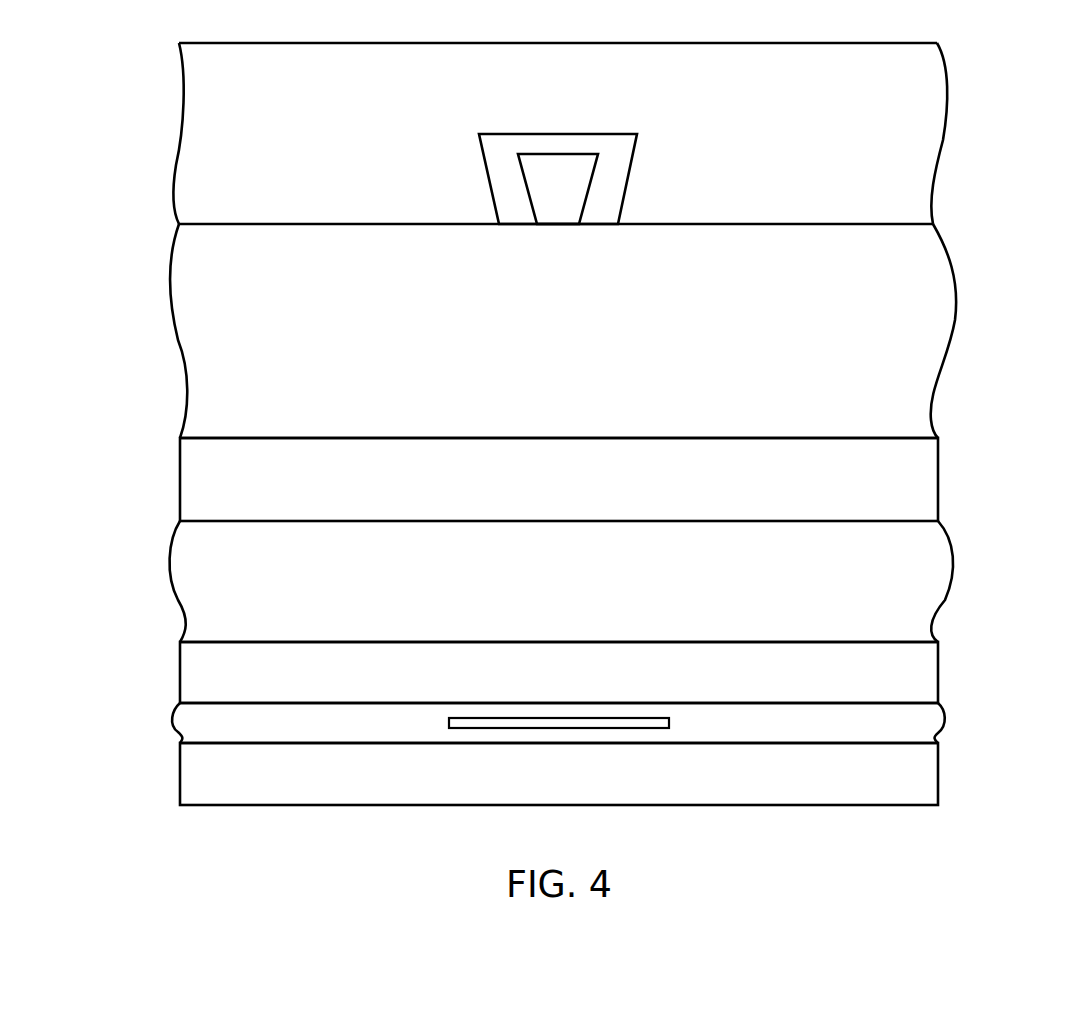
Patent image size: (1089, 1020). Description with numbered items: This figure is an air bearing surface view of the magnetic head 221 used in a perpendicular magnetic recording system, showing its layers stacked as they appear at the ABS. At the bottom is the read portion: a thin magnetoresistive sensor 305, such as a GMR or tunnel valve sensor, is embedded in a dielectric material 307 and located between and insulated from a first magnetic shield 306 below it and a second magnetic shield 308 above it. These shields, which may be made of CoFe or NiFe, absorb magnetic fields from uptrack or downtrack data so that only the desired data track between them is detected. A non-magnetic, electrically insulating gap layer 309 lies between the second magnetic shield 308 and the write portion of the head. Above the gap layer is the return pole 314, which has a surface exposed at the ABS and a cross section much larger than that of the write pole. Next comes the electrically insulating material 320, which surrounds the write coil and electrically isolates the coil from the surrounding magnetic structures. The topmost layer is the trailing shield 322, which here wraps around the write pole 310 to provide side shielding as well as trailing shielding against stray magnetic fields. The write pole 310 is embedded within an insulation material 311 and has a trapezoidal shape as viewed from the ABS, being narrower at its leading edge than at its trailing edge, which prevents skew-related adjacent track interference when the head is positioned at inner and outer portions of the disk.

The magnetic head 221 is at (973, 63).
The trailing shield 322 is at (389, 137).
The insulation material 311 is at (622, 165).
The write pole 310 is at (558, 205).
The electrically insulating material 320 is at (518, 337).
The return pole 314 is at (505, 479).
The gap layer 309 is at (508, 586).
The second magnetic shield 308 is at (510, 671).
The dielectric material 307 is at (818, 721).
The magnetoresistive sensor 305 is at (449, 723).
The first magnetic shield 306 is at (504, 772).